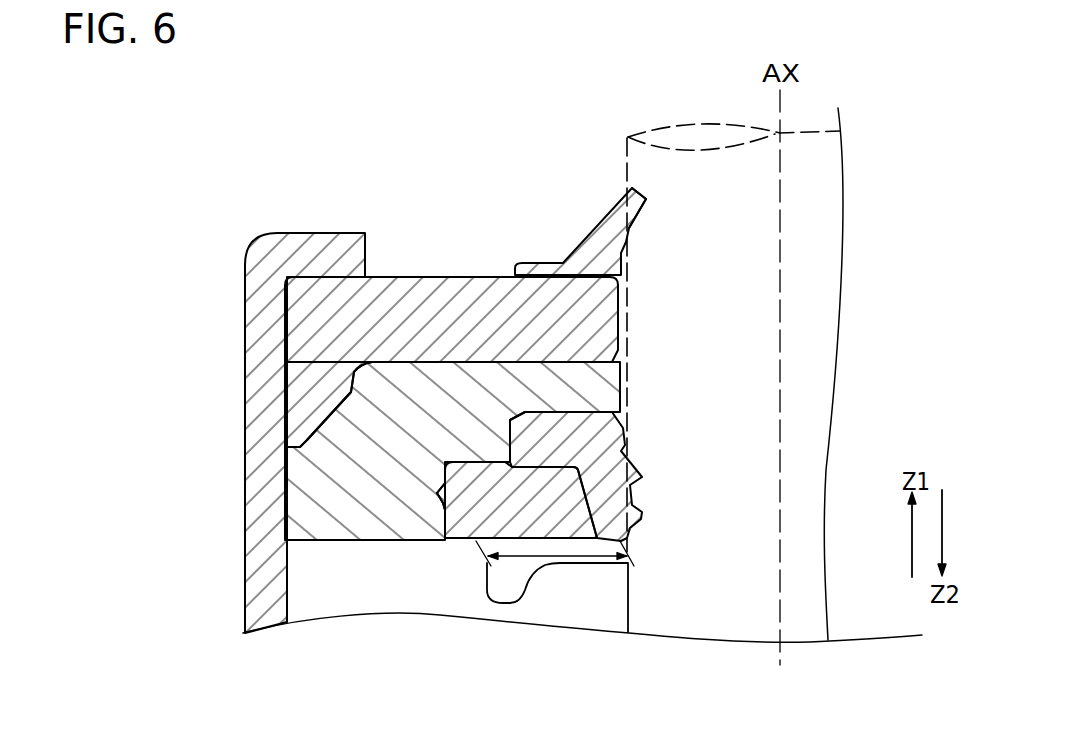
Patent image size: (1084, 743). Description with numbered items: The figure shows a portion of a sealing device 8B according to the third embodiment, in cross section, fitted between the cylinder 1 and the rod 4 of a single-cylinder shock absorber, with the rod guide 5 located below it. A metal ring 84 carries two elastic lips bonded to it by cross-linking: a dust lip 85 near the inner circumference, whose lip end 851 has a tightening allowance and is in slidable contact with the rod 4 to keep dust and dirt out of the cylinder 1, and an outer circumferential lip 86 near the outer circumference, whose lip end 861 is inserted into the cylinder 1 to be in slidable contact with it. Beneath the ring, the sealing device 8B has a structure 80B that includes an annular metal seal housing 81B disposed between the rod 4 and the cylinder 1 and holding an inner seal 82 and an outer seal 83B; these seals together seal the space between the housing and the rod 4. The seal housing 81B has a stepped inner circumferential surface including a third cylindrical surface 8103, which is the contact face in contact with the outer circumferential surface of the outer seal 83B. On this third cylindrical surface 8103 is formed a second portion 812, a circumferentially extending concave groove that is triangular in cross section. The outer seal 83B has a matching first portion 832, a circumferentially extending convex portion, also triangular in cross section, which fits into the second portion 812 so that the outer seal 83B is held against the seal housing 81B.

The cylinder 1 is at (314, 226).
The rod 4 is at (618, 153).
The rod guide 5 is at (280, 600).
The sealing device 8B is at (113, 252).
The dust lip 85 is at (407, 221).
The lip end 851 is at (630, 190).
The metal ring 84 is at (278, 327).
The outer circumferential lip 86 is at (270, 395).
The lip end 861 is at (305, 437).
The structure 80B is at (176, 440).
The seal housing 81B is at (398, 451).
The inner seal 82 is at (497, 430).
The outer seal 83B is at (367, 536).
The first portion 832 is at (437, 497).
The second portion 812 is at (443, 512).
The third cylindrical surface 8103 is at (634, 510).